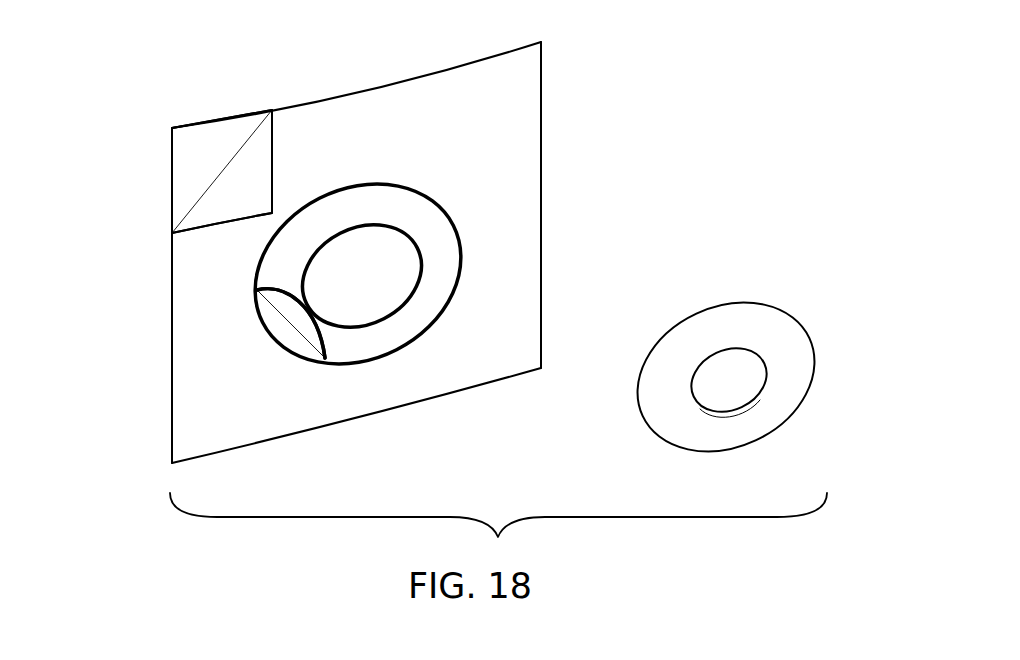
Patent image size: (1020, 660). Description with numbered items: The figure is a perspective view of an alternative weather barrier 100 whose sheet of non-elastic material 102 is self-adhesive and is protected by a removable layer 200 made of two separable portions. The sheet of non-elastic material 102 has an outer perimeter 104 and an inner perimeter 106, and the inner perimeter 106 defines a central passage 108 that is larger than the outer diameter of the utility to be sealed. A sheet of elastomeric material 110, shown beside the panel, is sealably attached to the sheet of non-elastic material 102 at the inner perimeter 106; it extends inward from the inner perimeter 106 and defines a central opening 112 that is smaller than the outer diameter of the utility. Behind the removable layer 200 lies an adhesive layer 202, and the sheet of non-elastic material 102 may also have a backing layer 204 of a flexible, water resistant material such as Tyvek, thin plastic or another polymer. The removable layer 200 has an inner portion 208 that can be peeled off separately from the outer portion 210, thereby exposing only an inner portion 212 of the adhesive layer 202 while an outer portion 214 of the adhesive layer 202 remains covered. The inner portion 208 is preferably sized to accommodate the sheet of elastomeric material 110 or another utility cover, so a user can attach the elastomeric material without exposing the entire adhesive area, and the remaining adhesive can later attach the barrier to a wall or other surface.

The weather barrier 100 is at (746, 108).
The sheet of non-elastic material 102 is at (500, 70).
The outer perimeter 104 is at (541, 140).
The inner perimeter 106 is at (413, 238).
The central passage 108 is at (395, 262).
The sheet of elastomeric material 110 is at (770, 335).
The central opening 112 is at (730, 390).
The removable layer 200 is at (232, 185).
The adhesive layer 202 is at (194, 174).
The backing layer 204 is at (172, 434).
The inner portion of removable layer 208 is at (290, 302).
The outer portion of removable layer 210 is at (254, 177).
The inner portion of adhesive layer 212 is at (275, 328).
The outer portion of adhesive layer 214 is at (207, 148).